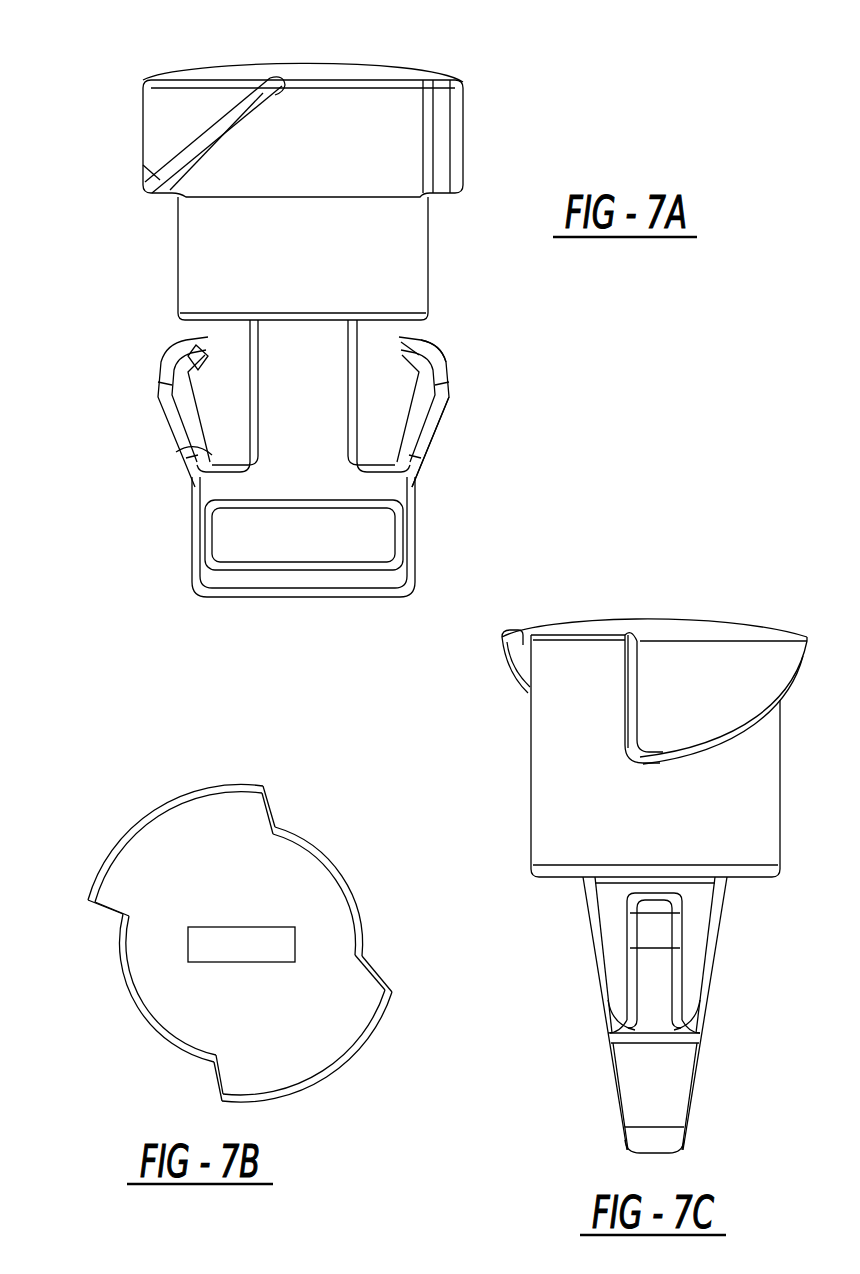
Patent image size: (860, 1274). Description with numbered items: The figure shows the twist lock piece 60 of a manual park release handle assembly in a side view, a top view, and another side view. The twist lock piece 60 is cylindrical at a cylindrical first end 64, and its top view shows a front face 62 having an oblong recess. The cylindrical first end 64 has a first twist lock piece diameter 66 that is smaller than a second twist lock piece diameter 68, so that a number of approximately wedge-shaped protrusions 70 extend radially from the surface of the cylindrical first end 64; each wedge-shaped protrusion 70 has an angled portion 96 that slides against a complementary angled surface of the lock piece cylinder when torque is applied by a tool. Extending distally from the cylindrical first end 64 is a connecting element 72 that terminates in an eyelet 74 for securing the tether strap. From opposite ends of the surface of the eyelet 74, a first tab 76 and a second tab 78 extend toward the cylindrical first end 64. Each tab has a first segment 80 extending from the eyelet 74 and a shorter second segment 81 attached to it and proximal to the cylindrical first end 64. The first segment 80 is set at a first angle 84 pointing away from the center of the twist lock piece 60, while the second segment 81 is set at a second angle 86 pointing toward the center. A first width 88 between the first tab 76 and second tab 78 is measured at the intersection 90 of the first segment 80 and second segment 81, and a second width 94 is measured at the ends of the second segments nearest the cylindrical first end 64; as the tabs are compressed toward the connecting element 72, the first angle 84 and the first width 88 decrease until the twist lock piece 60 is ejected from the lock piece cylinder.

In FIG. 7A, the twist lock piece 60 is at (527, 133).
In FIG. 7B, the twist lock piece 60 is at (158, 748).
In FIG. 7C, the twist lock piece 60 is at (783, 585).
In FIG. 7B, the front face 62 is at (190, 940).
In FIG. 7A, the cylindrical first end 64 is at (368, 115).
In FIG. 7C, the cylindrical first end 64 is at (558, 793).
In FIG. 7B, the first twist lock piece diameter 66 is at (142, 1000).
In FIG. 7B, the second twist lock piece diameter 68 is at (164, 809).
In FIG. 7A, the wedge-shaped protrusions 70 is at (175, 130).
In FIG. 7C, the wedge-shaped protrusions 70 is at (765, 668).
In FIG. 7A, the connecting element 72 is at (243, 418).
In FIG. 7C, the connecting element 72 is at (588, 935).
In FIG. 7A, the eyelet 74 is at (357, 542).
In FIG. 7C, the eyelet 74 is at (618, 1108).
In FIG. 7A, the first tab 76 is at (137, 392).
In FIG. 7C, the first tab 76 is at (685, 967).
In FIG. 7A, the second tab 78 is at (455, 400).
In FIG. 7A, the first segment 80 is at (437, 447).
In FIG. 7A, the second segment 81 is at (422, 355).
In FIG. 7A, the first angle 84 is at (230, 470).
In FIG. 7A, the second angle 86 is at (205, 378).
In FIG. 7A, the first width 88 is at (419, 395).
In FIG. 7A, the intersection 90 is at (453, 357).
In FIG. 7A, the second width 94 is at (397, 328).
In FIG. 7A, the angled portion 96 is at (232, 118).
In FIG. 7C, the angled portion 96 is at (760, 720).